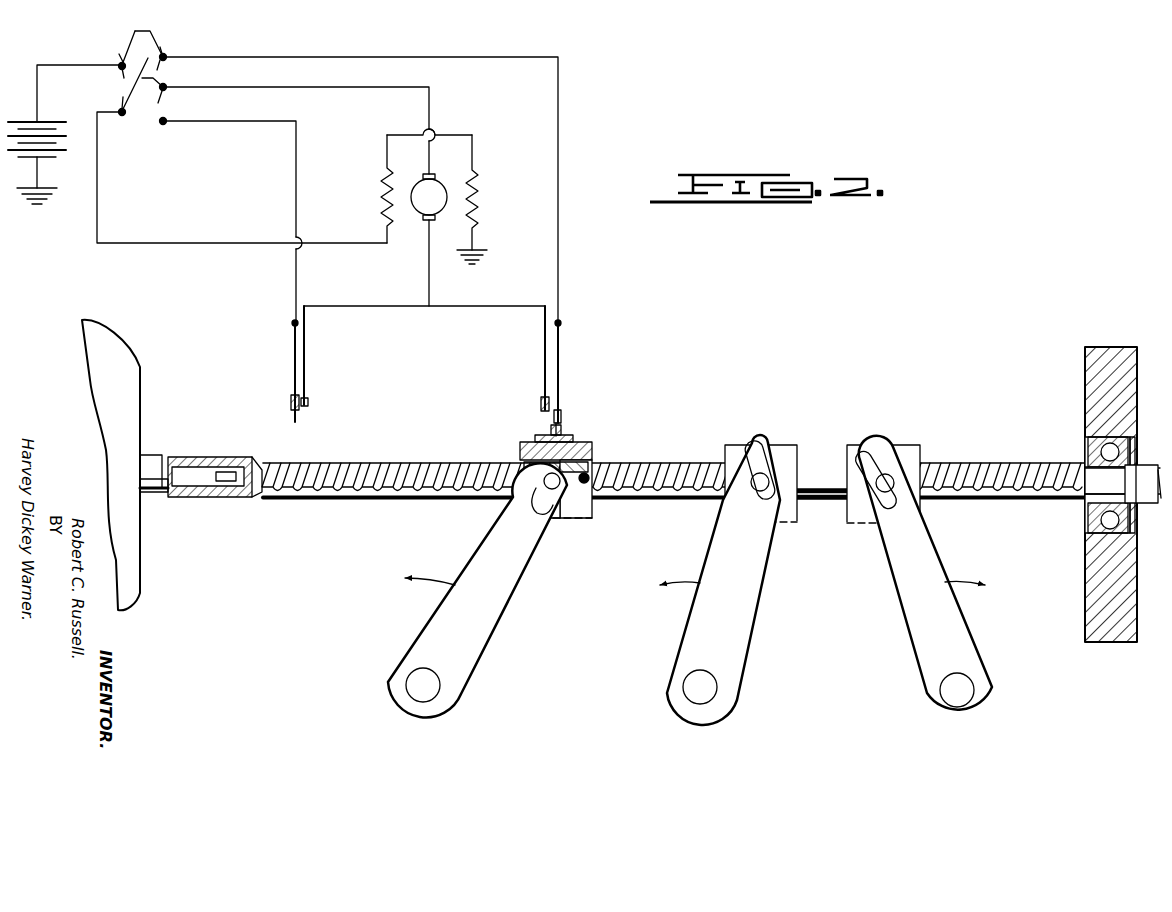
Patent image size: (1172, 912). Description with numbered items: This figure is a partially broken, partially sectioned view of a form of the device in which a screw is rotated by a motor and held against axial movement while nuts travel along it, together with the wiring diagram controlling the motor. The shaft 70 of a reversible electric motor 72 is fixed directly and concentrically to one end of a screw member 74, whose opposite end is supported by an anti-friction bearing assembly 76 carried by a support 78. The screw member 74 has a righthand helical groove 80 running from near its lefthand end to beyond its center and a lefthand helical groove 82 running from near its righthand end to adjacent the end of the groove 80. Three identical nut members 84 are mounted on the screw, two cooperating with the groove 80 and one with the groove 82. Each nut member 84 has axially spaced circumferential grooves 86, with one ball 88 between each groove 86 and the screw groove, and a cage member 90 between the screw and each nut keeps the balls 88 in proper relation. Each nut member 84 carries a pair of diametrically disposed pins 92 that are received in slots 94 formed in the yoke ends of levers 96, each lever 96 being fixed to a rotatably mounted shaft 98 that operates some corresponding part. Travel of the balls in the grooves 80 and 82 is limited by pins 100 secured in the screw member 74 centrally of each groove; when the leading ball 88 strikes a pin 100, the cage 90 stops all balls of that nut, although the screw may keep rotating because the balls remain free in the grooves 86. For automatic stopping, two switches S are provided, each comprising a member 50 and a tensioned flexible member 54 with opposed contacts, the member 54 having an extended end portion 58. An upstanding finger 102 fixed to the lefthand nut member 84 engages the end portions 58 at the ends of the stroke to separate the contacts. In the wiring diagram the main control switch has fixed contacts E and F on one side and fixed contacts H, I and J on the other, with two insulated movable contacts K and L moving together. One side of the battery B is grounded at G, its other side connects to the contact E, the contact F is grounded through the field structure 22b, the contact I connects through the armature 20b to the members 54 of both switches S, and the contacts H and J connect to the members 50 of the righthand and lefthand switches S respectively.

The battery B is at (44, 121).
The ground G is at (37, 207).
The movable contact K is at (141, 71).
The movable contact L is at (135, 31).
The fixed contact E is at (118, 70).
The fixed contact F is at (118, 116).
The fixed contact H is at (168, 52).
The fixed contact I is at (170, 80).
The fixed contact J is at (166, 125).
The switch S is at (308, 358).
The armature 20b is at (441, 182).
The field structure 22b is at (478, 197).
The member 50 is at (307, 376).
The flexible member 54 is at (291, 335).
The extended end portion 58 is at (299, 418).
The shaft 70 is at (145, 455).
The reversible electric motor 72 is at (126, 372).
The screw member 74 is at (196, 497).
The anti-friction bearing assembly 76 is at (1090, 445).
The support 78 is at (1085, 366).
The righthand helical groove 80 is at (282, 499).
The lefthand helical groove 82 is at (962, 464).
The nut member 84 is at (596, 449).
The groove 86 is at (574, 437).
The ball 88 is at (525, 450).
The cage member 90 is at (521, 455).
The pin 92 is at (561, 490).
The slot 94 is at (552, 500).
The lever 96 is at (510, 606).
The shaft 98 is at (440, 685).
The pin 100 is at (266, 462).
The finger 102 is at (555, 422).